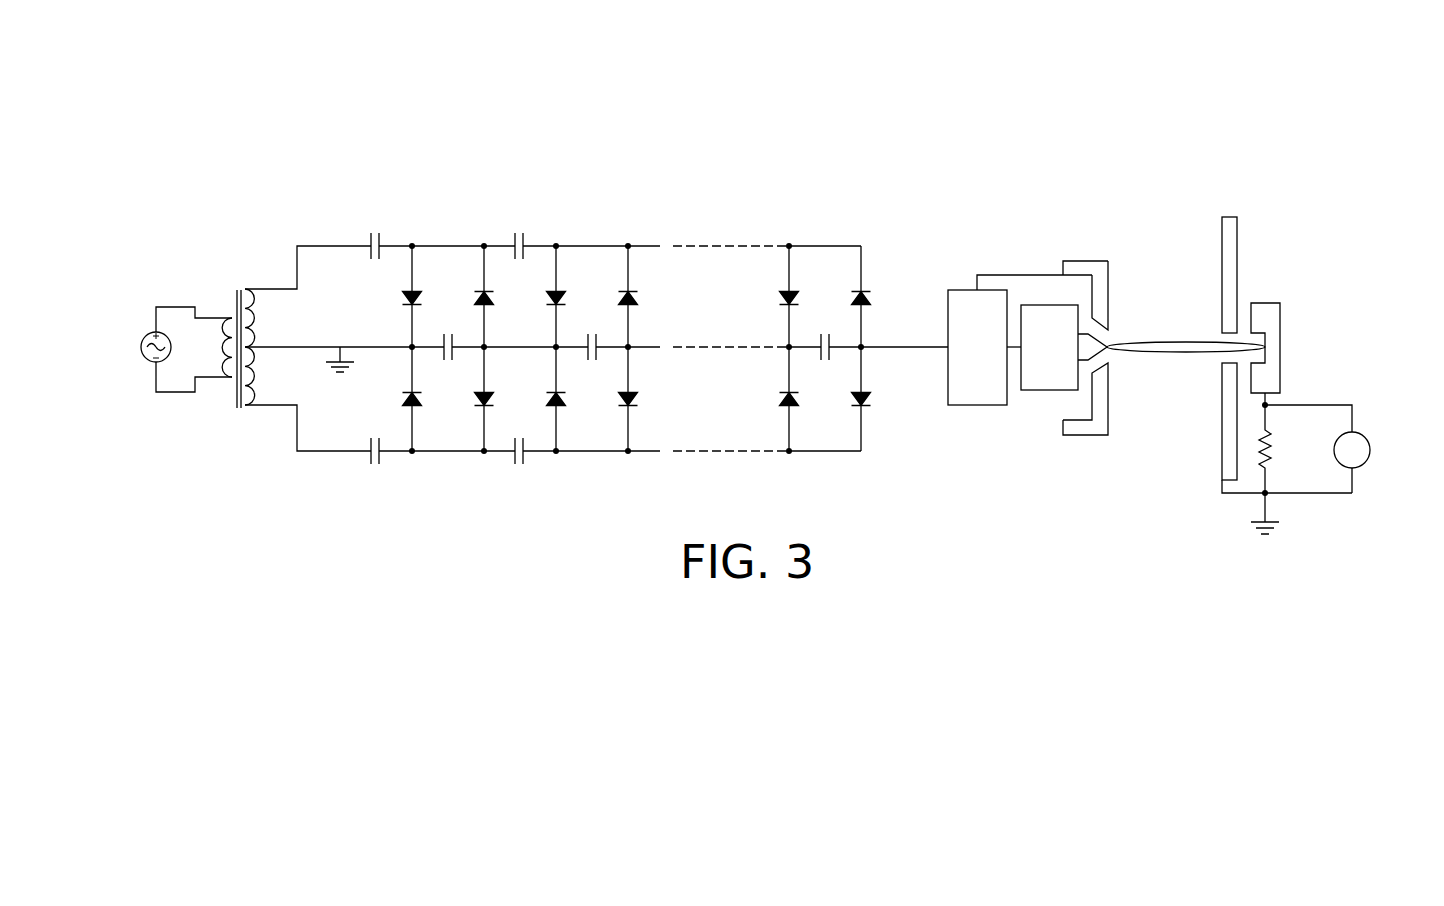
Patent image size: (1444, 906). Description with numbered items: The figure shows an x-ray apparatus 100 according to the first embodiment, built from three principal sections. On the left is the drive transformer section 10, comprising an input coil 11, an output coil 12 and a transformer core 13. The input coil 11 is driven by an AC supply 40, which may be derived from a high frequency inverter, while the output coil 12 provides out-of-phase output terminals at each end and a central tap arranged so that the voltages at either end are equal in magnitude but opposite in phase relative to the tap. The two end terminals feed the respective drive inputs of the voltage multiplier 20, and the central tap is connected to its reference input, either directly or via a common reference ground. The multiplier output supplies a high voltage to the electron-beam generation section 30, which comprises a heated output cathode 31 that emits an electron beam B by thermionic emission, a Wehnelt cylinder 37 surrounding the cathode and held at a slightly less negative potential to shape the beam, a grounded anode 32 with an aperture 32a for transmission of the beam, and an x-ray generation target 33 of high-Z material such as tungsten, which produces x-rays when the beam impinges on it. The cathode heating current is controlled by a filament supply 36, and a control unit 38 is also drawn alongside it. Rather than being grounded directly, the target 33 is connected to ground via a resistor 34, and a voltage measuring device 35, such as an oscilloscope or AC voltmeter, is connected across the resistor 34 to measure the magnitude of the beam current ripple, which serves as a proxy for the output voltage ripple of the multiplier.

The x-ray apparatus 100 is at (1392, 59).
The drive transformer section 10 is at (195, 152).
The input coil 11 is at (225, 347).
The output coil 12 is at (252, 362).
The transformer core 13 is at (237, 298).
The AC supply 40 is at (141, 347).
The voltage multiplier 20 is at (862, 152).
The electron-beam generation section 30 is at (912, 152).
The output cathode 31 is at (1110, 353).
The anode 32 is at (1237, 247).
The aperture 32a is at (1222, 337).
The x-ray generation target 33 is at (1280, 338).
The resistor 34 is at (1222, 439).
The voltage measuring device 35 is at (1368, 459).
The filament supply 36 is at (1035, 391).
The Wehnelt cylinder 37 is at (1085, 436).
The high voltage control unit 38 is at (948, 305).
The electron beam B is at (1144, 336).